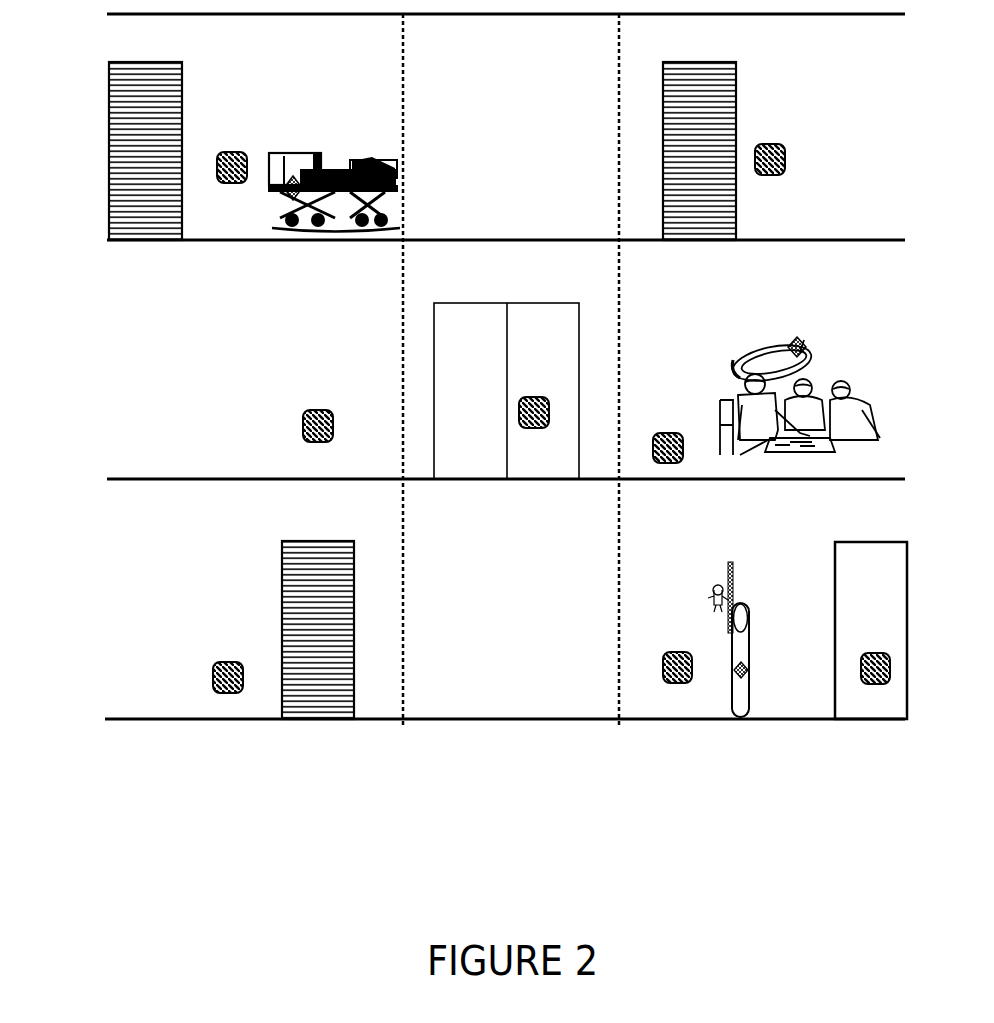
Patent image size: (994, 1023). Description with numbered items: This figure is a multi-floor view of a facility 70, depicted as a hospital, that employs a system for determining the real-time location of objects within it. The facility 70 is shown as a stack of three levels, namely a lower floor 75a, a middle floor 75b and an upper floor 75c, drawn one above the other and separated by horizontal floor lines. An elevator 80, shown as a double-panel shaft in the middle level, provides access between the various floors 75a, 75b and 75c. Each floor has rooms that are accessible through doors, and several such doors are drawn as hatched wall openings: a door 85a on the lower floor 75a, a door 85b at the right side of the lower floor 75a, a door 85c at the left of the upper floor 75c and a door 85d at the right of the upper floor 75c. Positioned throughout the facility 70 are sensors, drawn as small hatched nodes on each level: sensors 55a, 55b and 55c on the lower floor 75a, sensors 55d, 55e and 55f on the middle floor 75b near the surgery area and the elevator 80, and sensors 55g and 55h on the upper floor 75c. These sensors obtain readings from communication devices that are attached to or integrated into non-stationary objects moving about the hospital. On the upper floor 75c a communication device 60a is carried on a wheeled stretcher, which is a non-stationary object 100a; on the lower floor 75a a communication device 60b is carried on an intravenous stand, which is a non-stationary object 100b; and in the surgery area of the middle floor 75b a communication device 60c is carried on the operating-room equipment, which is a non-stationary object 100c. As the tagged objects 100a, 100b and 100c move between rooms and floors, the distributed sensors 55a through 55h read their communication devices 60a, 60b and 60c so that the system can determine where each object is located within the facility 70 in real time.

The facility 70 is at (324, 793).
The floor 75a is at (172, 616).
The floor 75b is at (843, 284).
The floor 75c is at (140, 43).
The elevator 80 is at (432, 340).
The door 85a is at (280, 563).
The door 85b is at (907, 558).
The door 85c is at (109, 147).
The door 85d is at (737, 118).
The sensor 55a is at (215, 668).
The sensor 55b is at (678, 685).
The sensor 55c is at (881, 688).
The sensor 55d is at (303, 432).
The sensor 55e is at (549, 405).
The sensor 55f is at (665, 433).
The sensor 55g is at (232, 150).
The sensor 55h is at (785, 160).
The communication device 60a is at (283, 195).
The communication device 60b is at (752, 672).
The communication device 60c is at (793, 340).
The non-stationary object 100a is at (340, 170).
The non-stationary object 100b is at (735, 590).
The non-stationary object 100c is at (765, 387).